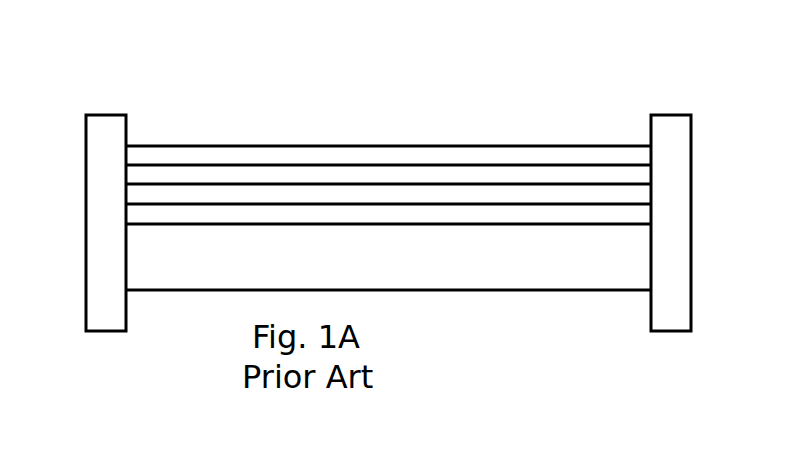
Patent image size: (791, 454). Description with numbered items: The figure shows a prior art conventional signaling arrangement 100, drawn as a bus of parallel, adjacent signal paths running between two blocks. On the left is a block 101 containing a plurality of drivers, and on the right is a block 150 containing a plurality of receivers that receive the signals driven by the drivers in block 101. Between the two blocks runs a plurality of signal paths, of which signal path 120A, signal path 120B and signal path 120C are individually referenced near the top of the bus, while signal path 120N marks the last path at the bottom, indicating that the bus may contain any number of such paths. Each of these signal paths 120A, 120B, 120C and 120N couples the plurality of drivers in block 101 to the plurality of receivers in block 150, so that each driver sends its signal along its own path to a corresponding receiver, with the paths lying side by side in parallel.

The conventional signaling arrangement 100 is at (495, 49).
The block of drivers 101 is at (116, 113).
The block of receivers 150 is at (660, 113).
The signal path 120A is at (183, 145).
The signal path 120B is at (357, 163).
The signal path 120C is at (478, 183).
The signal path 120N is at (447, 292).